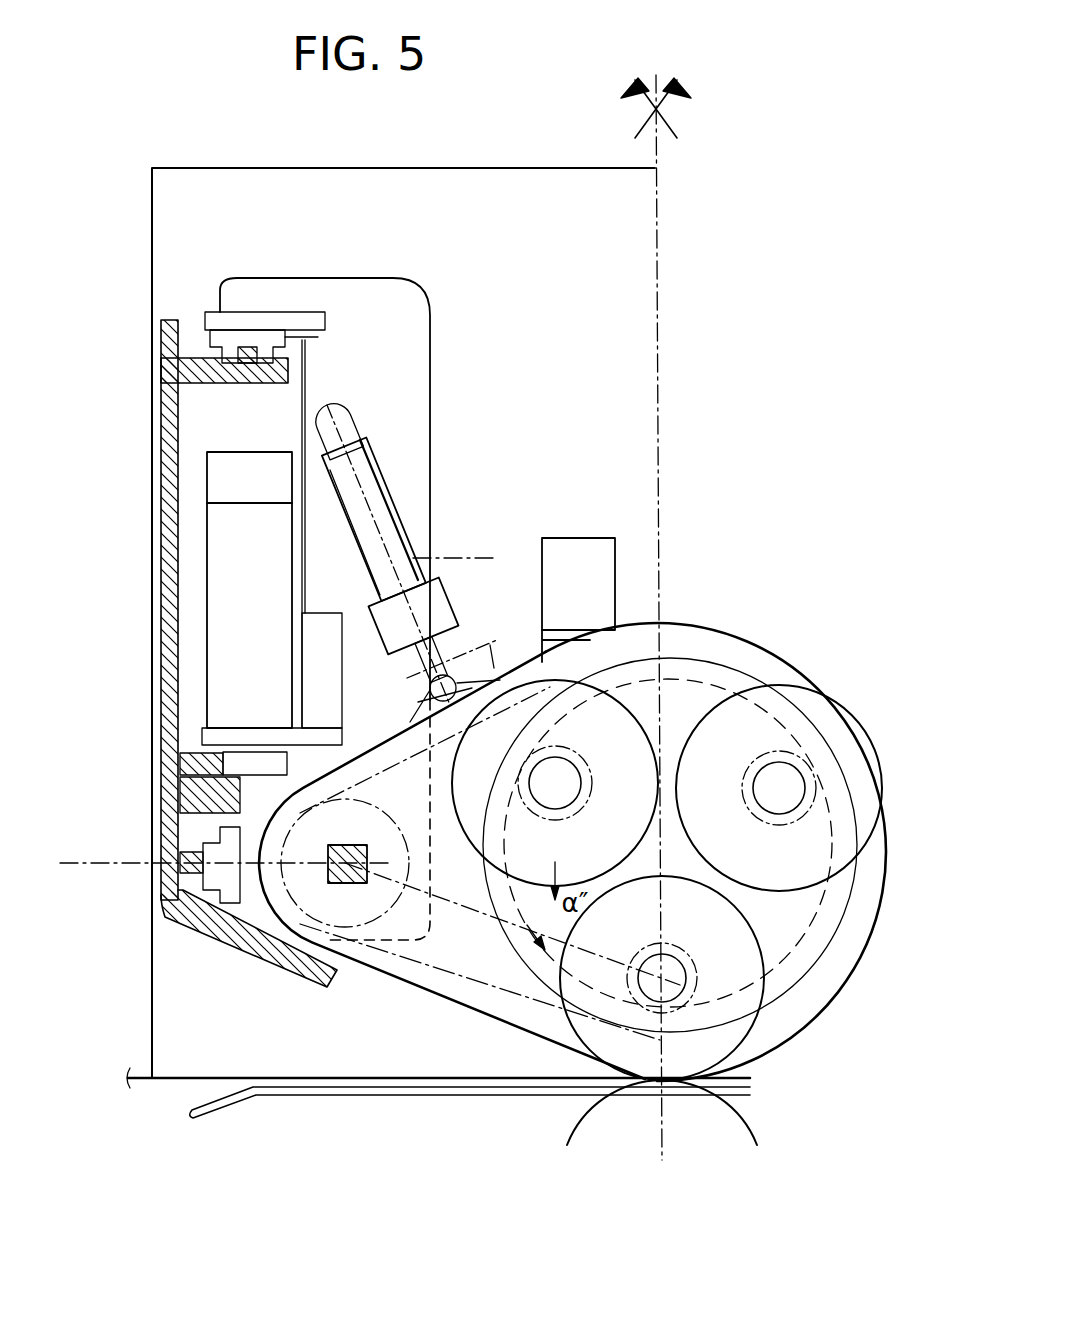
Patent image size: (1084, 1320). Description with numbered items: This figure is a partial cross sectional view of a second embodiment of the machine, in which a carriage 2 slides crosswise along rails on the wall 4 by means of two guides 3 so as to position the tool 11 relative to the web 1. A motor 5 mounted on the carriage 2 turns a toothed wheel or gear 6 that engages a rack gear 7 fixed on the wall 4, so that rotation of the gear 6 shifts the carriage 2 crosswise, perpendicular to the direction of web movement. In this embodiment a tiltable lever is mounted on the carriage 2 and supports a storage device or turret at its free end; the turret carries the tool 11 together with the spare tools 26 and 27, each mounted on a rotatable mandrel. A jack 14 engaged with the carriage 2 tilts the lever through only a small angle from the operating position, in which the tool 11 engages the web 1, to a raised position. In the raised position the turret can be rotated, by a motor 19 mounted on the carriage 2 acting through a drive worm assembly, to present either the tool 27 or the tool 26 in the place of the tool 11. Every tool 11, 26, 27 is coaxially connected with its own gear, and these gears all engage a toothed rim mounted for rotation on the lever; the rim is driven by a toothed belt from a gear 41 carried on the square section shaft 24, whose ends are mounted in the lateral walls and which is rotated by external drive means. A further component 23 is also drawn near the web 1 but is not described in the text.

The web 1 is at (733, 1087).
The carriage 2 is at (247, 290).
The guides 3 is at (223, 340).
The wall 4 is at (172, 518).
The motor 5 is at (240, 573).
The toothed wheel or gear 6 is at (252, 763).
The rack gear 7 is at (210, 762).
The tool 11 is at (743, 1023).
The jack 14 is at (328, 462).
The motor 19 is at (597, 557).
The sheet 23 is at (620, 1073).
The shaft 24 is at (333, 884).
The tool 26 is at (850, 740).
The tool 27 is at (613, 710).
The gear 41 is at (243, 900).